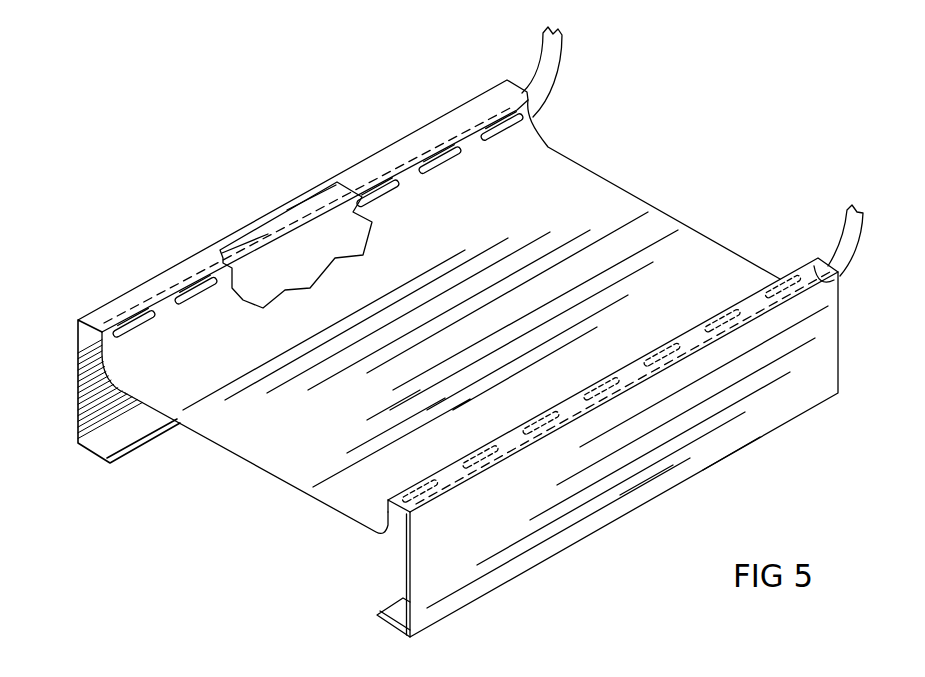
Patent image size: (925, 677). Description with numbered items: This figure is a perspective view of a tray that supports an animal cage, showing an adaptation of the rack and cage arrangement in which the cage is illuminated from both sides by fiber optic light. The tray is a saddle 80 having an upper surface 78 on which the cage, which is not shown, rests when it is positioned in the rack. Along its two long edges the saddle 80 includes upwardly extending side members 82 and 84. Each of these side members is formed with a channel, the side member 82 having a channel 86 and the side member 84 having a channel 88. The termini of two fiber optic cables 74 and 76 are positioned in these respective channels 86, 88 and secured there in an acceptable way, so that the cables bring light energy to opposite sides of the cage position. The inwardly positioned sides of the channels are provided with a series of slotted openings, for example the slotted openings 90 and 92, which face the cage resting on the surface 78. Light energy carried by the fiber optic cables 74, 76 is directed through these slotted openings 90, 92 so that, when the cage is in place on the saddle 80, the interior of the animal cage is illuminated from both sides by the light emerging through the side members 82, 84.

The fiber optic cable 74 is at (290, 227).
The fiber optic cable 76 is at (382, 525).
The surface 78 is at (243, 445).
The saddle 80 is at (305, 502).
The side member 82 is at (808, 255).
The side member 84 is at (358, 157).
The channel 86 is at (399, 540).
The channel 88 is at (90, 338).
The slotted opening 90 is at (717, 318).
The slotted opening 92 is at (195, 297).